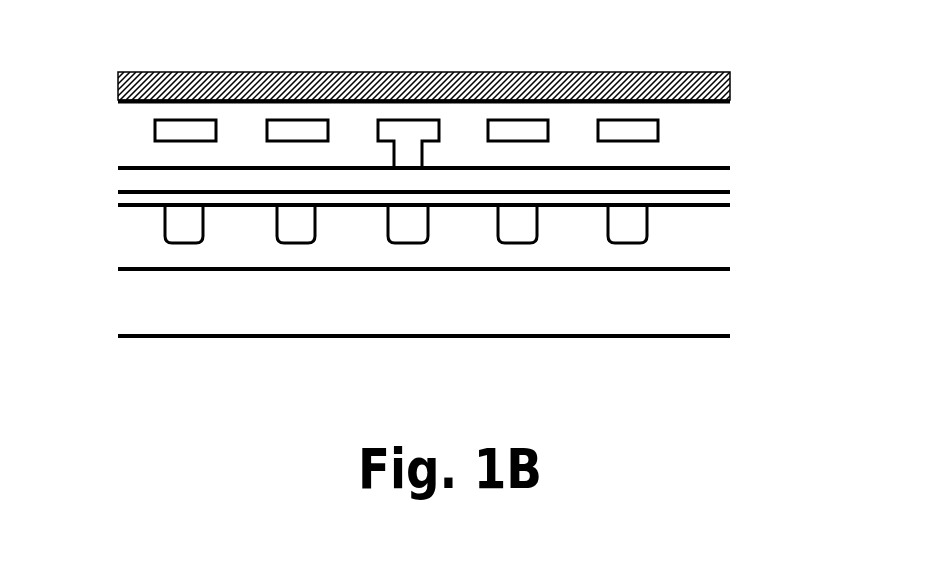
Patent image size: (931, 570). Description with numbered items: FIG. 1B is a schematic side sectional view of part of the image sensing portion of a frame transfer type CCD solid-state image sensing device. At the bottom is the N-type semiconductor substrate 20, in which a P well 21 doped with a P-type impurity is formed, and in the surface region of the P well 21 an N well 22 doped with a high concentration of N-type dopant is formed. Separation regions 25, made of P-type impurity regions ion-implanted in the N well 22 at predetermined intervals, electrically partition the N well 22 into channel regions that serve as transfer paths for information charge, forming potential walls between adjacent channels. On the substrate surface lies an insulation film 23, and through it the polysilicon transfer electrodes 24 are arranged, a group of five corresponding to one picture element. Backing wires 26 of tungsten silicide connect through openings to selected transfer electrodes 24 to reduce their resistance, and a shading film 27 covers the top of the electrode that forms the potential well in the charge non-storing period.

The N-type semiconductor substrate 20 is at (722, 375).
The P well 21 is at (722, 305).
The N well 22 is at (722, 252).
The insulation film 23 is at (722, 200).
The transfer electrodes 24 is at (722, 182).
The separation region 25 is at (186, 235).
The backing wires 26 is at (184, 130).
The shading film 27 is at (732, 85).